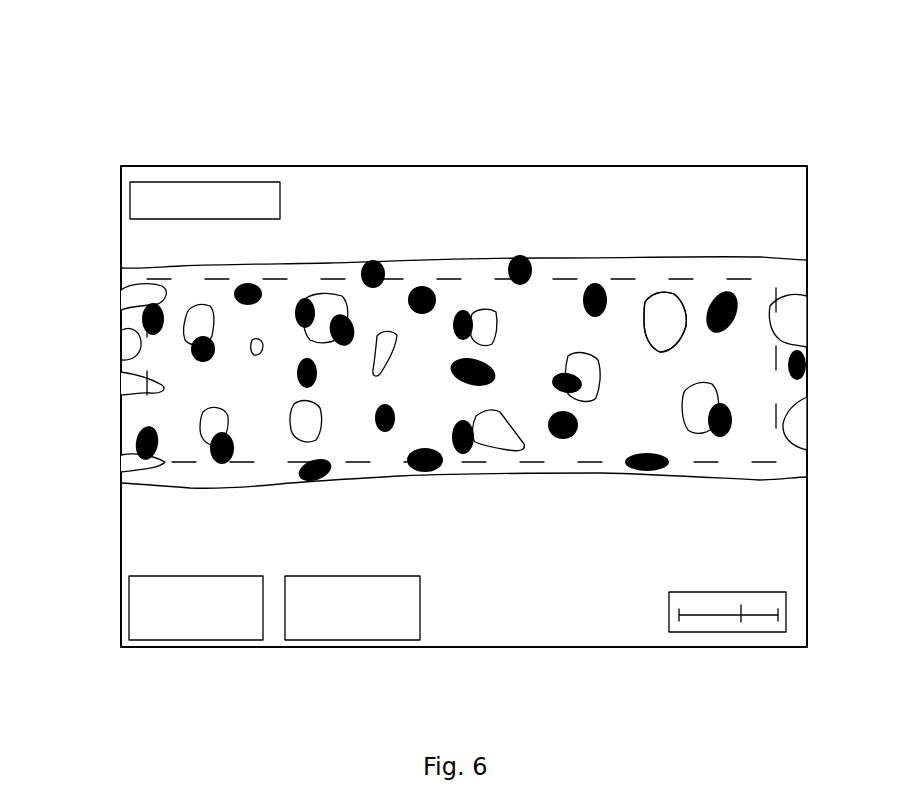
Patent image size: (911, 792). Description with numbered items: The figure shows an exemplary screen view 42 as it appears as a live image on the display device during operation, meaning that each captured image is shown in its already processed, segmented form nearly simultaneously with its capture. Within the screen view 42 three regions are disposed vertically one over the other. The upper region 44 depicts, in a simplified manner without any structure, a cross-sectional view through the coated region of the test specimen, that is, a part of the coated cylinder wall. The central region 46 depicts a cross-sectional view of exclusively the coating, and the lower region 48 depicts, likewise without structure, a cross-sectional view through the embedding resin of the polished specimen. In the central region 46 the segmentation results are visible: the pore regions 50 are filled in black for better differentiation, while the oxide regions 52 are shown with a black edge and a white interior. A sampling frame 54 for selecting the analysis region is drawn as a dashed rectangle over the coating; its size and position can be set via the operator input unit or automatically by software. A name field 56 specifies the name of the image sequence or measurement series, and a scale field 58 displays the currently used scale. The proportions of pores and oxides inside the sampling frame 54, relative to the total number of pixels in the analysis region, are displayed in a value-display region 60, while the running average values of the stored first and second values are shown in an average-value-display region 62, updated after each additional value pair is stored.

The screen view 42 is at (807, 166).
The upper region 44 is at (137, 251).
The central region 46 is at (168, 363).
The lower region 48 is at (155, 532).
The pore regions 50 is at (372, 262).
The oxide regions 52 is at (658, 313).
The sampling frame 54 is at (703, 280).
The name field 56 is at (147, 185).
The scale field 58 is at (718, 632).
The value-display region 60 is at (189, 640).
The average-value-display region 62 is at (350, 640).